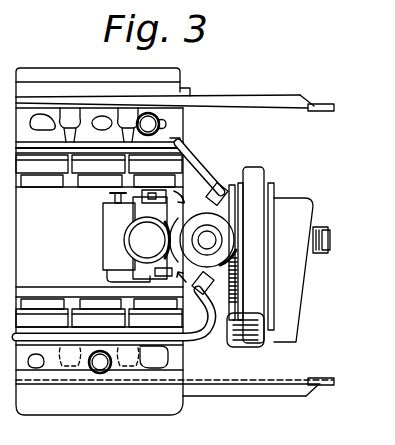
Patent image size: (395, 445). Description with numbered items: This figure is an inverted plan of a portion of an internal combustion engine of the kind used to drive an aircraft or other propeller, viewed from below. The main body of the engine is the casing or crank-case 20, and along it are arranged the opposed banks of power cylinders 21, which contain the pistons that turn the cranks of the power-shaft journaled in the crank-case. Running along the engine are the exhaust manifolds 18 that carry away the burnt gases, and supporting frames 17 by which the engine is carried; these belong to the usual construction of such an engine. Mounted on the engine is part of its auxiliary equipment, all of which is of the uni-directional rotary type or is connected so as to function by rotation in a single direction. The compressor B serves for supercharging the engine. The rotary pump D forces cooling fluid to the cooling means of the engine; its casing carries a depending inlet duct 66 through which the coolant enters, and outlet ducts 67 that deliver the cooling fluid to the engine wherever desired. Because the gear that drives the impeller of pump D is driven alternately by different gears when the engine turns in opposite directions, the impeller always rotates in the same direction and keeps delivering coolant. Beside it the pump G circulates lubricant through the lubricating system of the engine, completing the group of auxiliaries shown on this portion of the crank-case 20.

The supporting frame 17 is at (295, 97).
The exhaust manifold 18 is at (160, 121).
The crank-case 20 is at (103, 241).
The power cylinder 21 is at (181, 134).
The inlet duct 66 is at (216, 244).
The outlet duct 67 is at (214, 230).
The lubricant pump G is at (102, 253).
The rotary coolant pump D is at (216, 248).
The compressor B is at (278, 257).